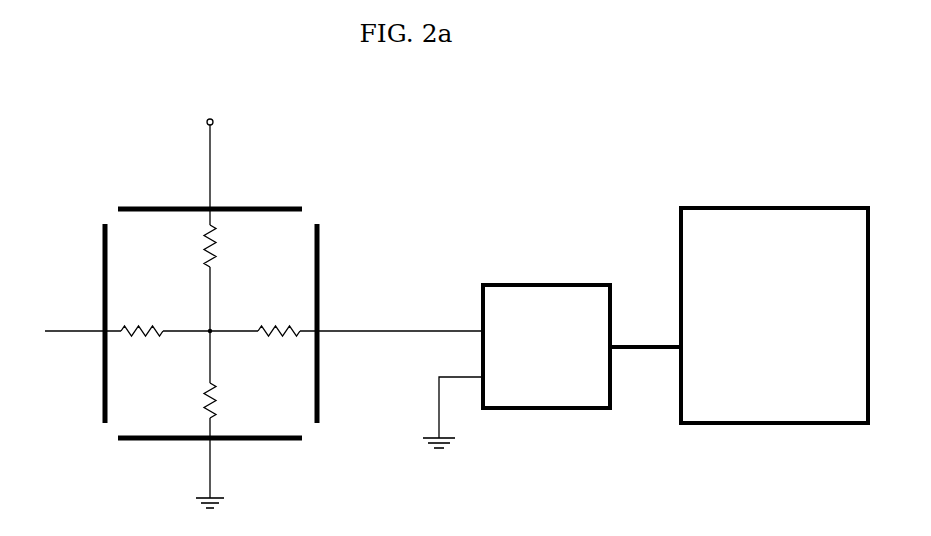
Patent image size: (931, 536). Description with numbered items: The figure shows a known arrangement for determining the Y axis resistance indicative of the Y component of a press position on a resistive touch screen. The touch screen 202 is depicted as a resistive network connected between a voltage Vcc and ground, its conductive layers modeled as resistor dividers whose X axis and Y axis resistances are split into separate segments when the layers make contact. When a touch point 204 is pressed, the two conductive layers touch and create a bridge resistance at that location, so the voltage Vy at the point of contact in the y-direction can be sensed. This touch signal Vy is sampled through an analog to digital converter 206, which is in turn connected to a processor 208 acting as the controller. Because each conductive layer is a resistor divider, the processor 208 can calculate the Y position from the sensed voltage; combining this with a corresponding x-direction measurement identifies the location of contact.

The resistive touch panel 202 is at (172, 198).
The touch point 204 is at (203, 333).
The analog to digital converter 206 is at (588, 277).
The processor 208 is at (846, 197).